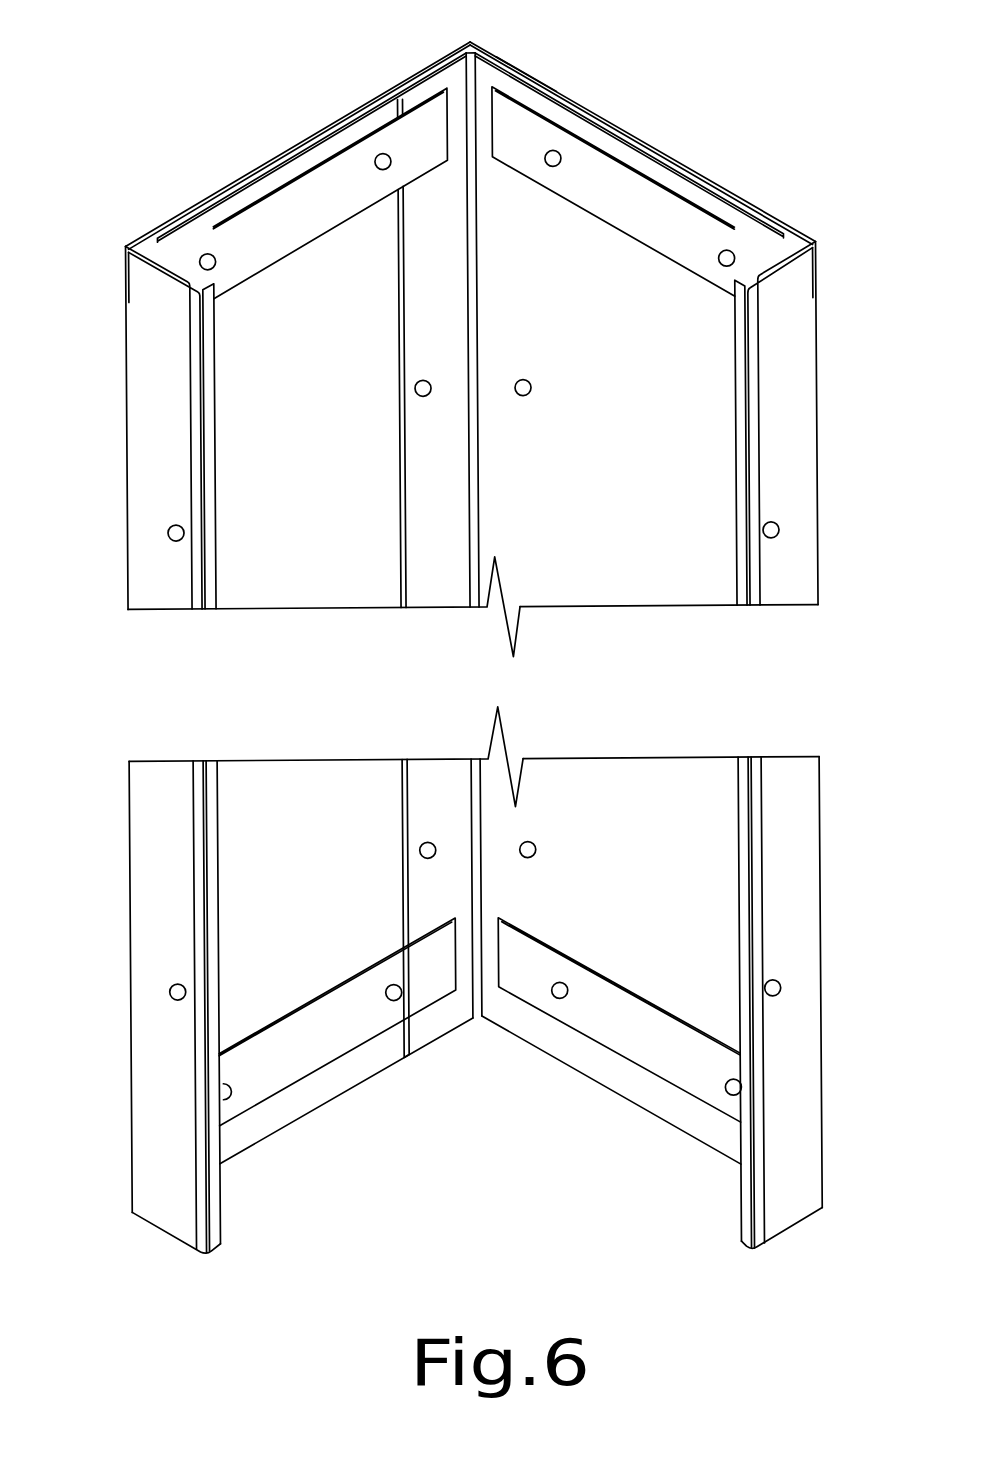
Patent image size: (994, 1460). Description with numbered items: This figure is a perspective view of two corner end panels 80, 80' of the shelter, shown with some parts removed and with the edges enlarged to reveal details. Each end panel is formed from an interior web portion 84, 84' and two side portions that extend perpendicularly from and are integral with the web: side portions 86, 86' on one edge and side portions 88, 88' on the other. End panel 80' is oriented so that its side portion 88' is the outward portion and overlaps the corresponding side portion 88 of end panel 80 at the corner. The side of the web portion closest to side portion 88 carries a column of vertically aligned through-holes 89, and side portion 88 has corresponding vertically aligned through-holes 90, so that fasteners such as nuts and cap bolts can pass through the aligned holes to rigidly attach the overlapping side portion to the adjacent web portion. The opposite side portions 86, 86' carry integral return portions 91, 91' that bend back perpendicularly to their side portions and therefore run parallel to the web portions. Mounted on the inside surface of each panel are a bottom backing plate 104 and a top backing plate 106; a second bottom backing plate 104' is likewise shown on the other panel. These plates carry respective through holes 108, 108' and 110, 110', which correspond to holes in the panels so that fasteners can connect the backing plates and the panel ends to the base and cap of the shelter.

The end panel 80 is at (650, 841).
The end panel 80' is at (326, 866).
The interior web portion 84 is at (640, 143).
The interior web portion 84' is at (297, 145).
The side portion 86 is at (837, 724).
The side portion 86' is at (107, 729).
The side portion 88 is at (500, 511).
The side portion 88' is at (574, 79).
The through-holes 89 is at (531, 383).
The through-holes 90 is at (417, 382).
The return portion 91 is at (738, 745).
The return portion 91' is at (218, 749).
The bottom backing plate 104 is at (619, 1002).
The bottom plate 104' is at (337, 1022).
The top backing plate 106 is at (614, 230).
The through holes 108 is at (604, 1066).
The hole 108' is at (313, 1041).
The through holes 110 is at (640, 229).
The hole 110' is at (295, 212).